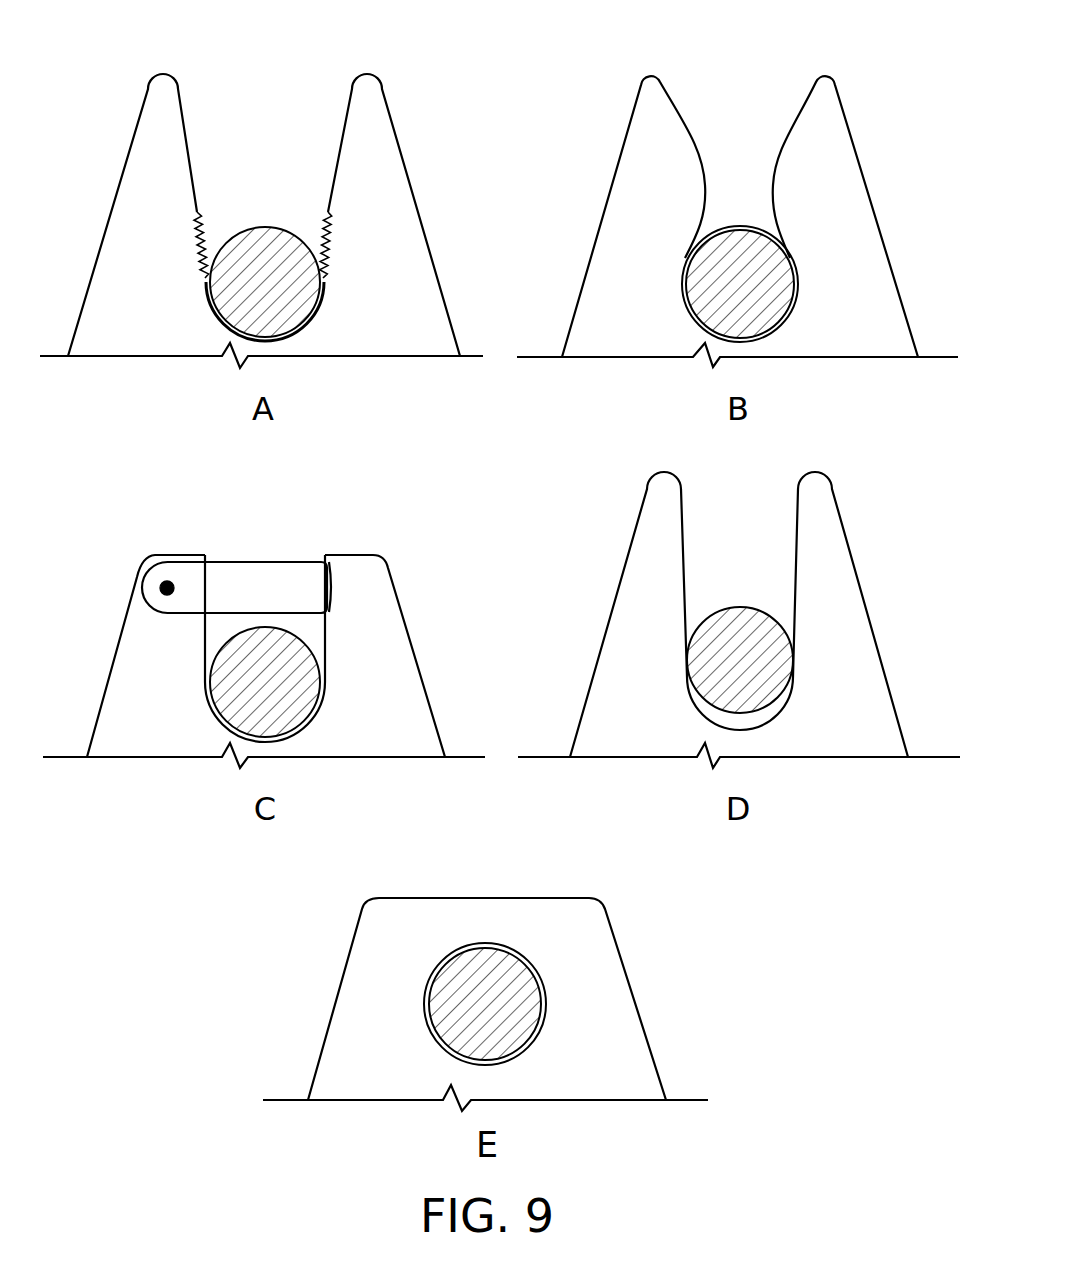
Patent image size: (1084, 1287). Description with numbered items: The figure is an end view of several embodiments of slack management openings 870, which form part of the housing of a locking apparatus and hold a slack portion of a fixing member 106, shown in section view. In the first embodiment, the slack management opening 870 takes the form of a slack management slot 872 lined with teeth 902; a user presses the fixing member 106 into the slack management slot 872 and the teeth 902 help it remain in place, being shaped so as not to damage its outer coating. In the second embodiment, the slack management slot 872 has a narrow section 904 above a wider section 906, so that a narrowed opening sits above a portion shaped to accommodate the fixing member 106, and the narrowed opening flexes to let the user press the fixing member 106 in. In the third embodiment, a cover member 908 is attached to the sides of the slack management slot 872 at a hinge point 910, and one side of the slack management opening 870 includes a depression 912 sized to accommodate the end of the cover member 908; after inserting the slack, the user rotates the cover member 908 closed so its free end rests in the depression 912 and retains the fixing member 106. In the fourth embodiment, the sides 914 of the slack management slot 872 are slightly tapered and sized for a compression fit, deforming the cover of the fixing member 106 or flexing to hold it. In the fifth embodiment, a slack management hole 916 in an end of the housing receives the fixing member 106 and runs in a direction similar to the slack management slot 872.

The fixing member 106 is at (278, 292).
The slack management opening 870 is at (172, 537).
The slack management slot 872 is at (213, 103).
The teeth 902 is at (327, 228).
The narrow section 904 is at (705, 188).
The wider section 906 is at (680, 299).
The cover member 908 is at (247, 580).
The hinge point 910 is at (167, 588).
The depression 912 is at (333, 587).
The sides 914 is at (682, 538).
The slack management hole 916 is at (539, 970).